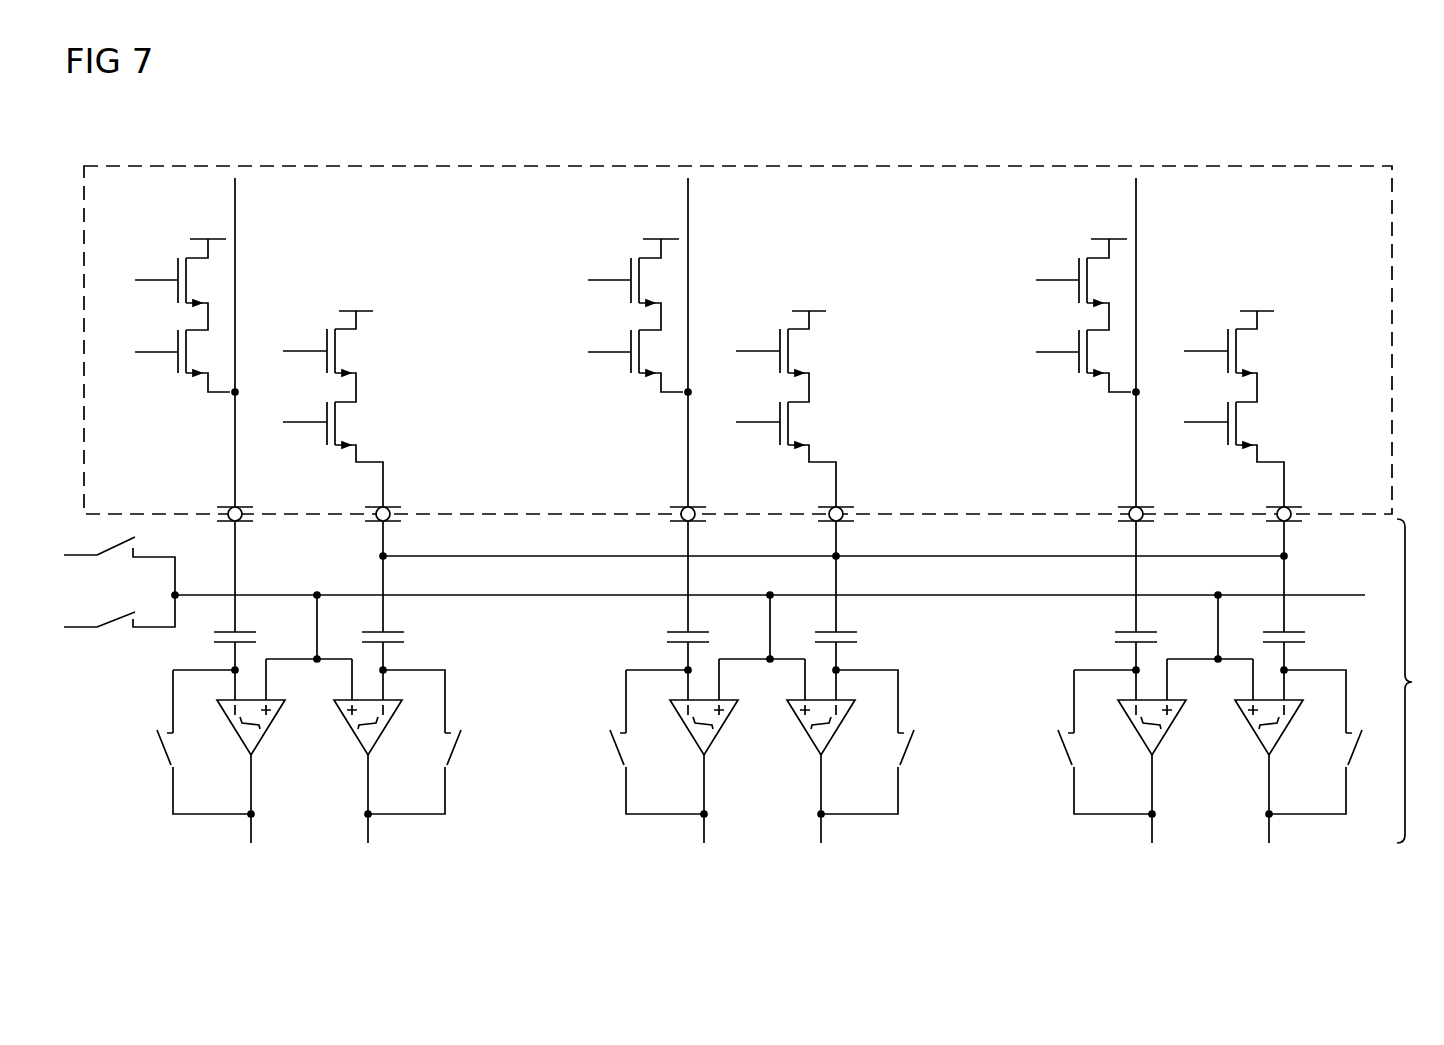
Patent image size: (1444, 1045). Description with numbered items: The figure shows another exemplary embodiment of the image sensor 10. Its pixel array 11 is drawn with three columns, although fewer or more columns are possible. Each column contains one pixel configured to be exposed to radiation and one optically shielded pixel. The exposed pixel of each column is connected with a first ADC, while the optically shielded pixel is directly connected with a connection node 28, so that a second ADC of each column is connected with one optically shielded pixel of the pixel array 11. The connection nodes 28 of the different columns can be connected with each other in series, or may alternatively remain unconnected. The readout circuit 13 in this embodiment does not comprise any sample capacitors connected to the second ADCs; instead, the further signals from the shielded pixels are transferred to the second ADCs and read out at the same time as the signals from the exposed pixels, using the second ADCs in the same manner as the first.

The image sensor 10 is at (1360, 115).
The pixel array 11 is at (805, 166).
The readout circuit 13 is at (754, 681).
The connection node 28 is at (383, 556).